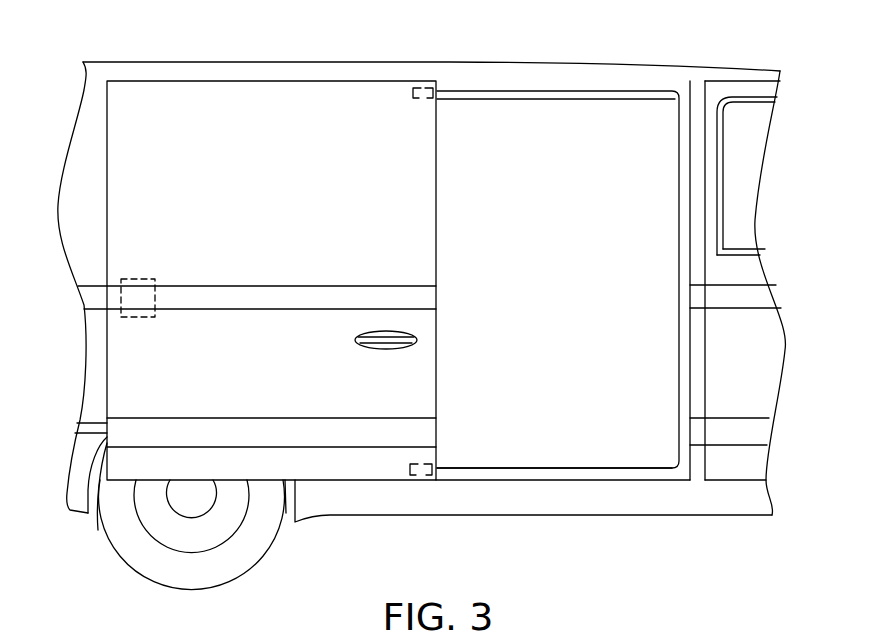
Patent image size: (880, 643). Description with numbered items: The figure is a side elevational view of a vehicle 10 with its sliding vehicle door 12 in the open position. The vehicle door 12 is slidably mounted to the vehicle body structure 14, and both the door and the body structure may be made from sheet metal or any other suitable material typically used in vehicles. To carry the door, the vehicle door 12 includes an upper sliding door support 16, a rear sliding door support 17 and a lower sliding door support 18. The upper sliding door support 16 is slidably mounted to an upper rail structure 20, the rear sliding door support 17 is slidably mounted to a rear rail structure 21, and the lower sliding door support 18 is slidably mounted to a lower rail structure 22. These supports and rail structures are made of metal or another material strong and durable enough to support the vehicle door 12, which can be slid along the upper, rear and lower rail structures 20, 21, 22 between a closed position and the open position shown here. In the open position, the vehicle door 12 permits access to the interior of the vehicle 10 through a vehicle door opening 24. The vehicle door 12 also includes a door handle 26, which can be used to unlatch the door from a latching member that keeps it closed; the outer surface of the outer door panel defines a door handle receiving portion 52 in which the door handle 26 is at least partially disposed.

The vehicle 10 is at (703, 30).
The vehicle door 12 is at (200, 124).
The vehicle body structure 14 is at (293, 72).
The upper sliding door support 16 is at (416, 100).
The rear sliding door support 17 is at (148, 278).
The lower sliding door support 18 is at (416, 482).
The upper rail structure 20 is at (493, 94).
The rear rail structure 21 is at (92, 300).
The lower rail structure 22 is at (564, 473).
The vehicle door opening 24 is at (592, 127).
The door handle 26 is at (376, 340).
The door handle receiving portion 52 is at (390, 348).